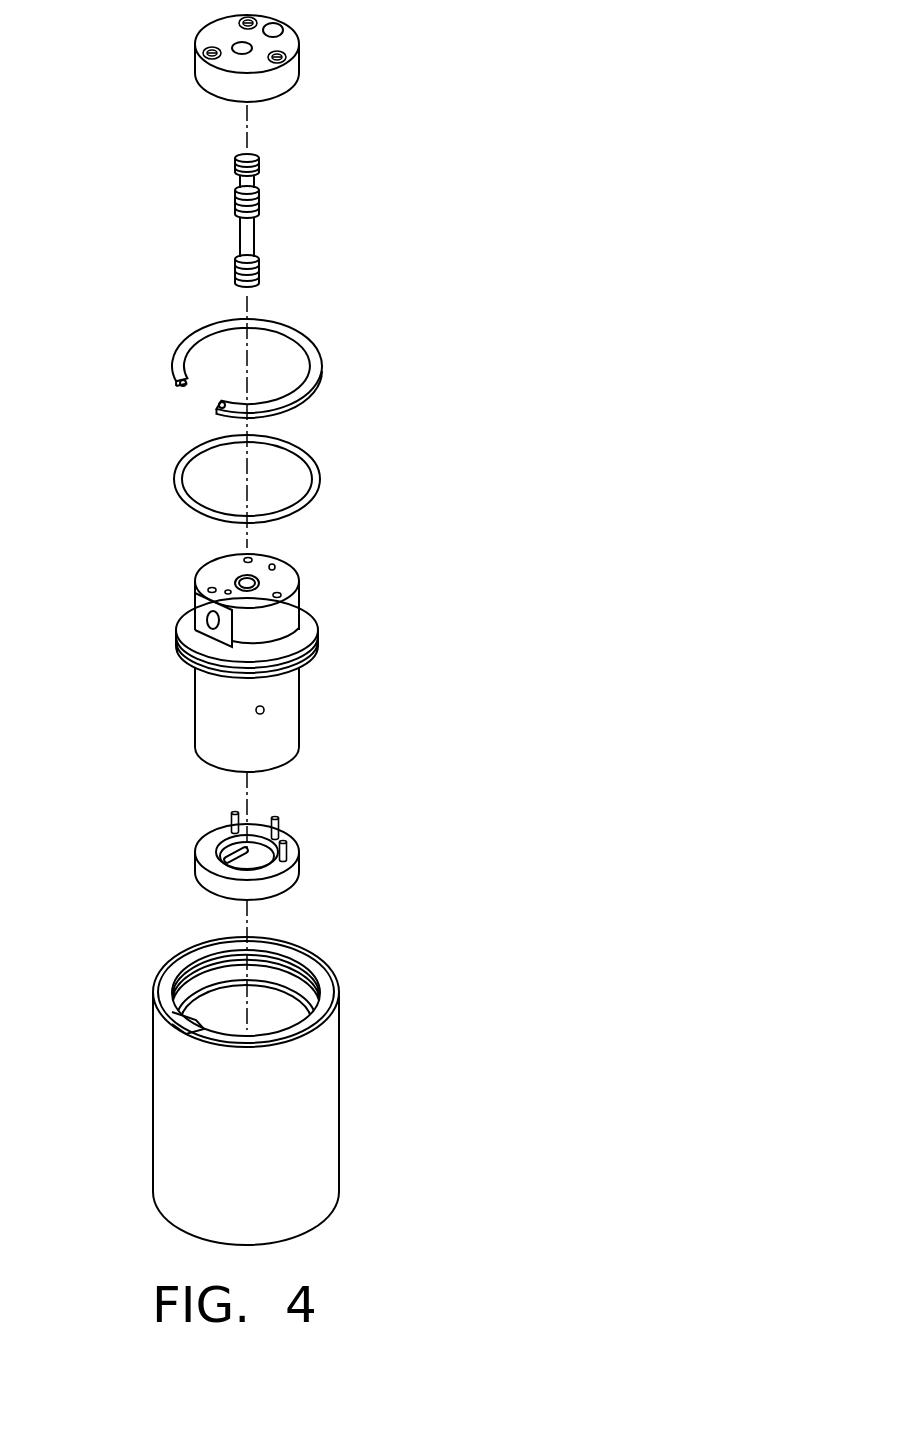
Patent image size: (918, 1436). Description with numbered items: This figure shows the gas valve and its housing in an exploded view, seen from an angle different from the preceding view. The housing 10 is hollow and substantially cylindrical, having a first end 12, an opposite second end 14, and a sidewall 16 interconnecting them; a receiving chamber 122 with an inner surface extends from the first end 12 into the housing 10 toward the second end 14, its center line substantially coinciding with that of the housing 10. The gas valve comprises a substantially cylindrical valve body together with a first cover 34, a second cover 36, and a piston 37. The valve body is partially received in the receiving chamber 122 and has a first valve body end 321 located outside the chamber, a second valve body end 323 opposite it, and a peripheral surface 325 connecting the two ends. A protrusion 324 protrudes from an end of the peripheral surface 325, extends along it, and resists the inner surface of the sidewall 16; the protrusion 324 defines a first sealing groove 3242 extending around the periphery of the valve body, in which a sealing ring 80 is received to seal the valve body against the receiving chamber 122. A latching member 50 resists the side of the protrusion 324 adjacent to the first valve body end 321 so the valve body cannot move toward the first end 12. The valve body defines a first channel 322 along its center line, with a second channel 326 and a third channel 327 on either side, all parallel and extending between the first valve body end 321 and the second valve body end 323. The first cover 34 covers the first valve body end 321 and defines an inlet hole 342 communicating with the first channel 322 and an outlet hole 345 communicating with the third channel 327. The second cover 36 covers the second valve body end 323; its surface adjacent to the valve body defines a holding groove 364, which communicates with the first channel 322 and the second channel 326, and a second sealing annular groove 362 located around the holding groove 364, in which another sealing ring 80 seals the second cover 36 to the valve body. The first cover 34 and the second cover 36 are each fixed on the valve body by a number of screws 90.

The housing 10 is at (293, 1091).
The first end 12 is at (325, 1003).
The receiving chamber 122 is at (275, 1002).
The second end 14 is at (336, 1205).
The sidewall 16 is at (330, 1138).
The first cover 34 is at (291, 71).
The inlet hole 342 is at (241, 47).
The outlet hole 345 is at (276, 31).
The piston 37 is at (250, 229).
The latching member 50 is at (310, 357).
The sealing ring 80 is at (308, 463).
The first valve body end 321 is at (285, 581).
The first channel 322 is at (241, 578).
The second channel 326 is at (228, 590).
The third channel 327 is at (274, 567).
The protrusion 324 is at (304, 626).
The first sealing groove 3242 is at (306, 654).
The peripheral surface 325 is at (290, 702).
The second valve body end 323 is at (291, 756).
The second cover 36 is at (290, 876).
The second sealing annular groove 362 is at (213, 862).
The holding groove 364 is at (229, 852).
The screws 90 is at (233, 815).